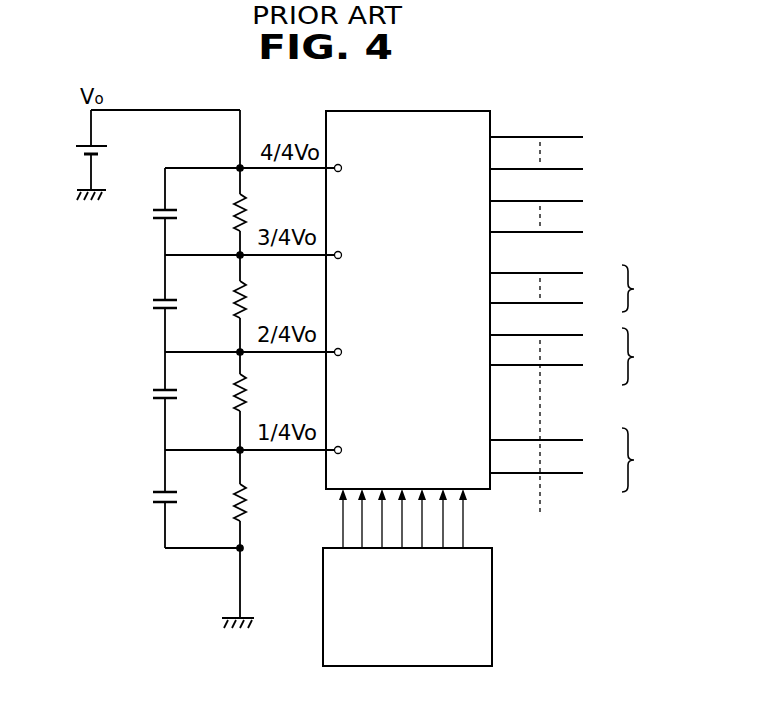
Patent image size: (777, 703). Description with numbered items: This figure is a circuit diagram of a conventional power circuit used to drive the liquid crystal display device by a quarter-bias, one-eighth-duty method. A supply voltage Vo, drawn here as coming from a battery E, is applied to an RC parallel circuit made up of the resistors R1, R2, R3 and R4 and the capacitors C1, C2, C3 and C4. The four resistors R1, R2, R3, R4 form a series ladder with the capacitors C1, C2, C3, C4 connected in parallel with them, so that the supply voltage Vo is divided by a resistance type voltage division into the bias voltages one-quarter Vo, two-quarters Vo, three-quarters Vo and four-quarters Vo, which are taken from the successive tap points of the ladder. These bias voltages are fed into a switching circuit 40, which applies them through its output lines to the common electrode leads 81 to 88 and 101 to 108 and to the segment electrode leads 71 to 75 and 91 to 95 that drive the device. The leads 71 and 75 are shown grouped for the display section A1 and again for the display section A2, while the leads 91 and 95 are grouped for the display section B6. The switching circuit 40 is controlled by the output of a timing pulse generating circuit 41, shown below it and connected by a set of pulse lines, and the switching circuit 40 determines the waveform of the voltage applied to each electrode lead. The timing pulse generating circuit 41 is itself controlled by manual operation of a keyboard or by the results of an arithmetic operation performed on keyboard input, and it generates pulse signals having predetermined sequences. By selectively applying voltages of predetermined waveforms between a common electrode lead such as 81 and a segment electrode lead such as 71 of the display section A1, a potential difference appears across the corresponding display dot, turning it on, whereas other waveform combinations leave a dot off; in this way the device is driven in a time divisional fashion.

The switching circuit 40 is at (452, 111).
The timing pulse generating circuit 41 is at (492, 605).
The battery (voltage source) E is at (80, 155).
The resistor R1 is at (236, 496).
The resistor R2 is at (236, 398).
The resistor R3 is at (236, 301).
The resistor R4 is at (236, 213).
The capacitor C1 is at (160, 497).
The capacitor C2 is at (160, 394).
The capacitor C3 is at (160, 302).
The capacitor C4 is at (160, 214).
The common electrode lead 81 is at (552, 137).
The common electrode lead 88 is at (552, 169).
The common electrode lead 101 is at (559, 201).
The common electrode lead 108 is at (559, 232).
The segment electrode lead 71 is at (554, 304).
The segment electrode lead 75 is at (554, 334).
The segment electrode lead 91 is at (554, 440).
The segment electrode lead 95 is at (554, 473).
The display section A1 is at (644, 288).
The output line group A2 is at (644, 356).
The output line group B6 is at (644, 460).